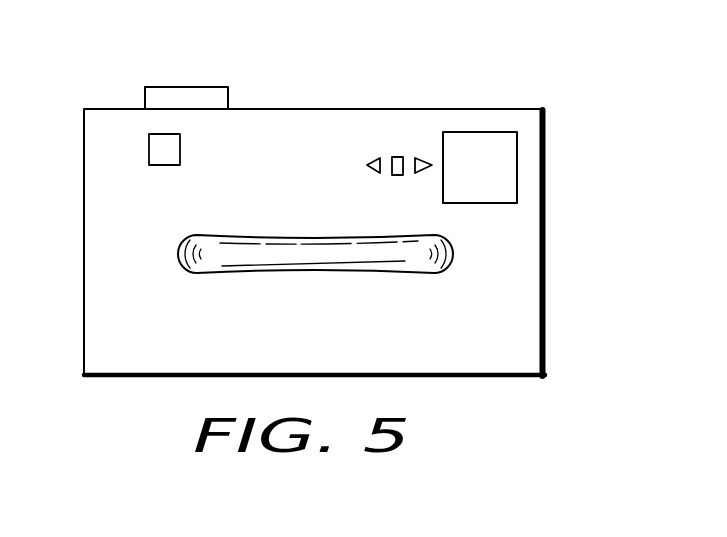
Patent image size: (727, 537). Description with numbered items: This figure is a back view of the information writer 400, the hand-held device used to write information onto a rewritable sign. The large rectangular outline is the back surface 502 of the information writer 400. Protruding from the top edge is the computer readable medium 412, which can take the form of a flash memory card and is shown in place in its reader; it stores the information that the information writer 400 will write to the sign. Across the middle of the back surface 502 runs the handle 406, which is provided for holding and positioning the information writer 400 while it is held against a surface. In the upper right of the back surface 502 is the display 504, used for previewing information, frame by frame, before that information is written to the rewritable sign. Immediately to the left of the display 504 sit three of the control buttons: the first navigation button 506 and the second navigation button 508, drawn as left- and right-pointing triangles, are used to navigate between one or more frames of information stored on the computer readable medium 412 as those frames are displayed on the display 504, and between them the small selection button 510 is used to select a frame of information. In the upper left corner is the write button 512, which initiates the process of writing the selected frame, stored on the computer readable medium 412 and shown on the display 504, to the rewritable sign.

The information writer 400 is at (358, 72).
The handle 406 is at (398, 265).
The computer readable medium 412 is at (148, 88).
The back surface 502 is at (507, 247).
The display 504 is at (517, 158).
The first navigation button 506 is at (368, 167).
The second navigation button 508 is at (418, 157).
The selection button 510 is at (394, 155).
The write button 512 is at (150, 142).